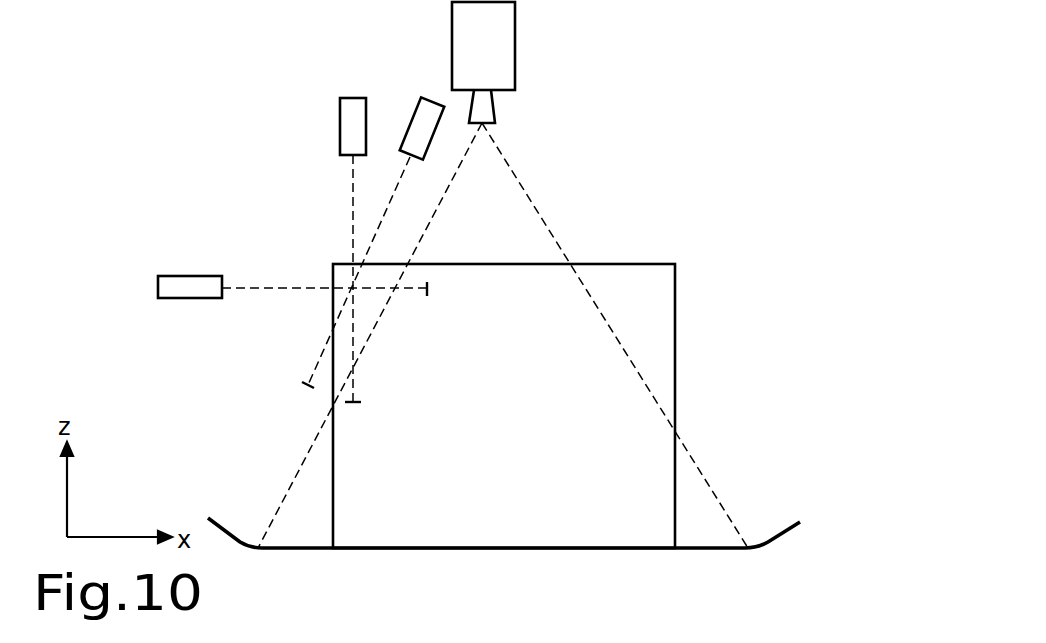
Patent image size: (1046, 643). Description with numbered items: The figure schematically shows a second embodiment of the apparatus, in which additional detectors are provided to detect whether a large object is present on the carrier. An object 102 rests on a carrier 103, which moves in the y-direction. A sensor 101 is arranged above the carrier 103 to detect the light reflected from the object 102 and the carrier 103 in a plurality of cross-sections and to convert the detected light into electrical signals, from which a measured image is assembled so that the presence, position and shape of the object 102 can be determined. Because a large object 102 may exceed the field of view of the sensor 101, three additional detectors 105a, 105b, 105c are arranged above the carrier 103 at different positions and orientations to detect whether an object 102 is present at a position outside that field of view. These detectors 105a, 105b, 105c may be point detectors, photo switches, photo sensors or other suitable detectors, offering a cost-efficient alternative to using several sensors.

The sensor 101 is at (490, 48).
The object 102 is at (653, 306).
The carrier 103 is at (777, 527).
The additional detector 105a is at (188, 285).
The additional detector 105b is at (349, 131).
The additional detector 105c is at (420, 116).